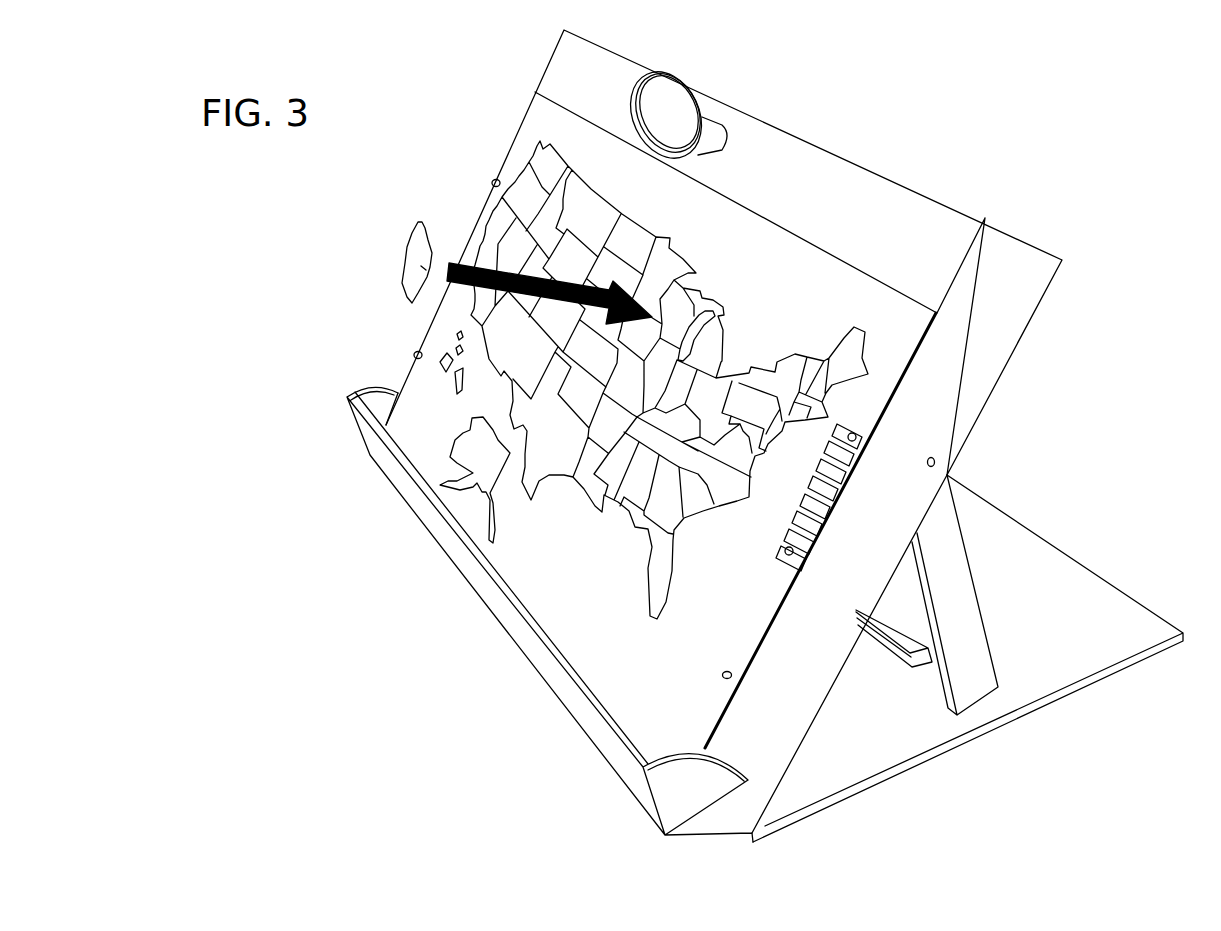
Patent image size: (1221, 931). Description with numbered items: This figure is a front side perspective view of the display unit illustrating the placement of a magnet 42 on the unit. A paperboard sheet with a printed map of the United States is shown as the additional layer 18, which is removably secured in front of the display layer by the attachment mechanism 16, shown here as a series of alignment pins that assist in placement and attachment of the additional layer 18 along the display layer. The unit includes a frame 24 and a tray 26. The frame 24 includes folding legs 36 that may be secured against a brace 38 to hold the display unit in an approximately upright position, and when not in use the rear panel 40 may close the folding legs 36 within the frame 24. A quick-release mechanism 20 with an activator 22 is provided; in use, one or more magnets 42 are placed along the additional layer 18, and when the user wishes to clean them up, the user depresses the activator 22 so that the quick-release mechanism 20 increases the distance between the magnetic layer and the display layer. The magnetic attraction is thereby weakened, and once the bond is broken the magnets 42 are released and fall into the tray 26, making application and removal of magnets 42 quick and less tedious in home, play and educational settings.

The attachment mechanism 16 is at (863, 457).
The additional layer 18 is at (572, 596).
The quick-release mechanism 20 is at (762, 83).
The activator 22 is at (657, 108).
The frame 24 is at (1007, 290).
The tray 26 is at (626, 762).
The folding legs 36 is at (957, 590).
The brace 38 is at (905, 640).
The rear panel 40 is at (1085, 658).
The magnet 42 is at (412, 265).